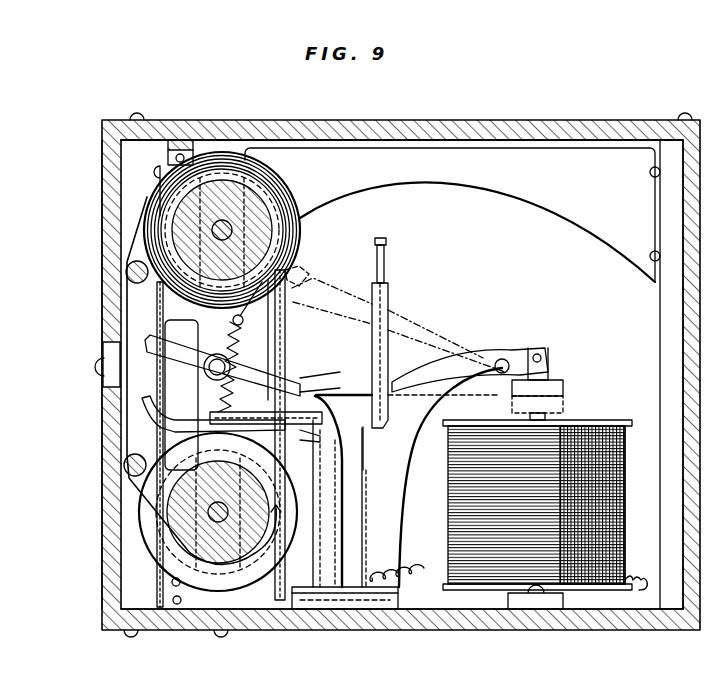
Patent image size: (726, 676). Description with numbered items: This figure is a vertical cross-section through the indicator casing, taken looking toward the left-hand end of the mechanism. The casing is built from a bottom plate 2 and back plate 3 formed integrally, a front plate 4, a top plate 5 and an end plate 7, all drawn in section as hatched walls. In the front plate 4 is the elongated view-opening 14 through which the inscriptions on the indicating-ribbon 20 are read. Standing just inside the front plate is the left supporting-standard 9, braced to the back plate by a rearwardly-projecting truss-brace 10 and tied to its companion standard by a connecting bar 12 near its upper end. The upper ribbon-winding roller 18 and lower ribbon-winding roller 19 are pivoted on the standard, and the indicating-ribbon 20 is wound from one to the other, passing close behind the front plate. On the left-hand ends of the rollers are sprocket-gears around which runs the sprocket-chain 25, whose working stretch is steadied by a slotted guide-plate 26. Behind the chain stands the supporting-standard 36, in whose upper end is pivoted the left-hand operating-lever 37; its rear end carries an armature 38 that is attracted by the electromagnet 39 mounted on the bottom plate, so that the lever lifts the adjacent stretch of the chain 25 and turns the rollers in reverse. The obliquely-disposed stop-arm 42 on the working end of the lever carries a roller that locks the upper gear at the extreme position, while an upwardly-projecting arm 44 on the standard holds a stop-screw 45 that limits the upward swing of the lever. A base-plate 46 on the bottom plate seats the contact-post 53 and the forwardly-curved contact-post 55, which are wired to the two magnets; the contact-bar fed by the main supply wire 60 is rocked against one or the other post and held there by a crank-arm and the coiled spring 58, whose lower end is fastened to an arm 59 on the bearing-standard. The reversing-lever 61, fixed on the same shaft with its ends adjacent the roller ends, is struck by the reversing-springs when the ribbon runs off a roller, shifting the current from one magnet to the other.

The bottom plate 2 is at (470, 630).
The back plate 3 is at (118, 262).
The front plate 4 is at (116, 444).
The top plate 5 is at (510, 124).
The end plate 7 is at (477, 232).
The left supporting-standard 9 is at (130, 556).
The truss-brace 10 is at (464, 374).
The connecting bar 12 is at (184, 140).
The view-opening 14 is at (106, 352).
The upper ribbon-winding roller 18 is at (268, 206).
The lower ribbon-winding roller 19 is at (165, 505).
The indicating-ribbon 20 is at (302, 250).
The sprocket-chain 25 is at (285, 363).
The guide-plate 26 is at (282, 347).
The supporting-standard 36 is at (407, 477).
The left-hand operating-lever 37 is at (396, 390).
The armature 38 is at (565, 388).
The electromagnet 39 is at (472, 492).
The stop-arm 42 is at (322, 396).
The upwardly-projecting arm 44 is at (392, 343).
The stop-screw 45 is at (388, 272).
The base-plate 46 is at (382, 606).
The contact-post 53 is at (320, 434).
The contact-post 55 is at (310, 462).
The coiled spring 58 is at (230, 344).
The arm 59 is at (318, 418).
The main supply wire 60 is at (176, 384).
The reversing-lever 61 is at (170, 422).